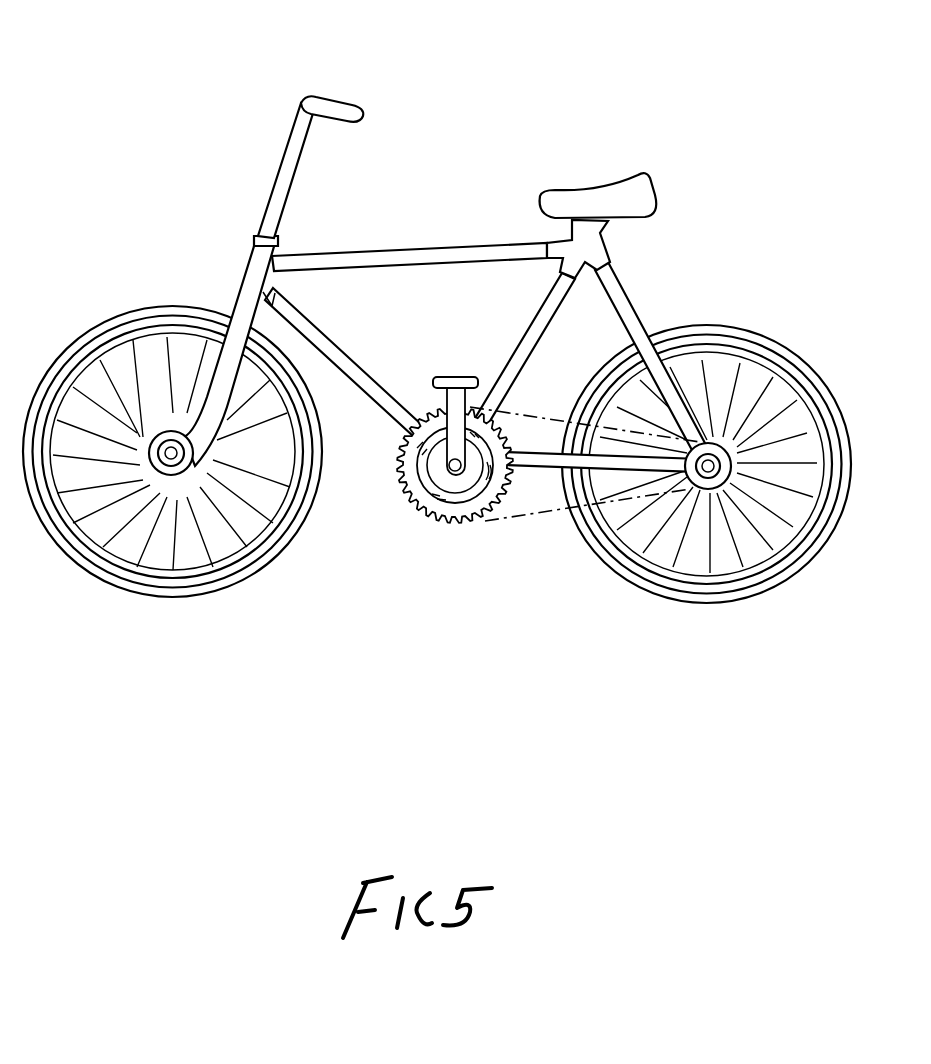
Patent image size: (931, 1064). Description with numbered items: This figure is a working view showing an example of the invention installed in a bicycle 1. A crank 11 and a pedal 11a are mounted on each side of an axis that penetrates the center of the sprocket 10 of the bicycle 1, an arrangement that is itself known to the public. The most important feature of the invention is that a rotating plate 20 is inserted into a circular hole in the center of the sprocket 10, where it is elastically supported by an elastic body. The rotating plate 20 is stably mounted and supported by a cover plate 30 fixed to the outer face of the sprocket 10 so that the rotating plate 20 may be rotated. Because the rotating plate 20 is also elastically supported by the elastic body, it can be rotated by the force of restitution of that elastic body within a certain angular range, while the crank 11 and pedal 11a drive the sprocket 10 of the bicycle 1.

The bicycle 1 is at (533, 90).
The sprocket 10 is at (517, 477).
The crank 11 is at (453, 448).
The pedal 11a is at (455, 380).
The rotating plate 20 is at (452, 470).
The cover plate 30 is at (477, 495).